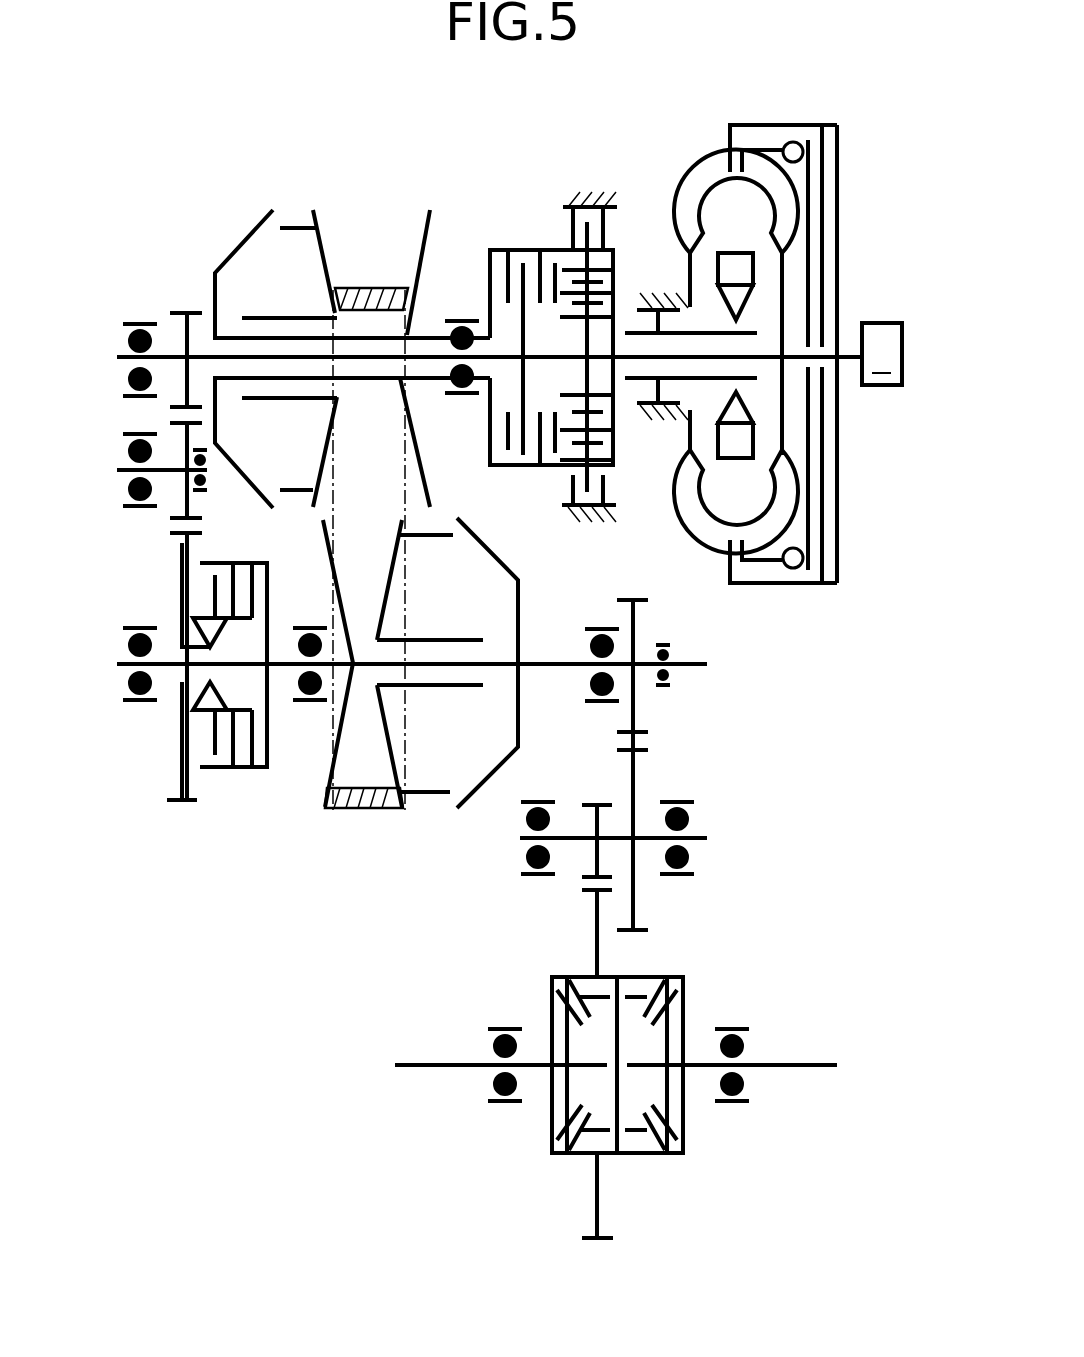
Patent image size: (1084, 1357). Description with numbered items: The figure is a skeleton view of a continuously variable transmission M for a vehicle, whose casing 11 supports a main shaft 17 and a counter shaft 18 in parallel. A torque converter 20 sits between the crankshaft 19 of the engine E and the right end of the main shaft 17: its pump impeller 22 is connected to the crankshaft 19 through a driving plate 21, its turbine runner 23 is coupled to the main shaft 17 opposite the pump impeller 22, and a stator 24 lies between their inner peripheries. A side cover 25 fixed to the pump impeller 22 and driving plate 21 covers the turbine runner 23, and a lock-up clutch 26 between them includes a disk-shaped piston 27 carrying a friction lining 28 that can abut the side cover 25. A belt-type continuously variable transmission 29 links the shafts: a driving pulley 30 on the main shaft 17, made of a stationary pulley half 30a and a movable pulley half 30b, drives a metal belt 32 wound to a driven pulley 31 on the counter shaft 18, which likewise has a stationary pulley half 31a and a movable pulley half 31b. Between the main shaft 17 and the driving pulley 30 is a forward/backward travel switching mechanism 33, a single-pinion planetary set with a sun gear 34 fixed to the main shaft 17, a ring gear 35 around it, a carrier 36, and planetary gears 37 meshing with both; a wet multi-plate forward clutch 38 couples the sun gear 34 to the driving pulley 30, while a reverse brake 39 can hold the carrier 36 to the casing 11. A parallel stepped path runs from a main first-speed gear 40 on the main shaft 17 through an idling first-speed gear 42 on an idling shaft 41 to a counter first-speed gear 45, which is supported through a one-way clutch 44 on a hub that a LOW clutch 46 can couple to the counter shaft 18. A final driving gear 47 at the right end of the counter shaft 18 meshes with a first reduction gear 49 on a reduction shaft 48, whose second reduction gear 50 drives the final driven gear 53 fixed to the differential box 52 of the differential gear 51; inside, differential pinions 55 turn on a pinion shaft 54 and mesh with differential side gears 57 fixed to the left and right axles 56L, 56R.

The continuously variable transmission M is at (300, 198).
The engine E is at (882, 354).
The casing 11 is at (575, 200).
The main shaft 17 is at (365, 362).
The counter shaft 18 is at (355, 658).
The crankshaft 19 is at (848, 362).
The torque converter 20 is at (752, 348).
The driving plate 21 is at (840, 243).
The pump impeller 22 is at (688, 190).
The turbine runner 23 is at (742, 140).
The stator 24 is at (736, 268).
The side cover 25 is at (826, 205).
The lock-up clutch 26 is at (830, 548).
The piston 27 is at (824, 296).
The friction lining 28 is at (802, 143).
The belt-type continuously variable transmission 29 is at (318, 750).
The driving pulley 30 is at (349, 457).
The stationary pulley half 30a is at (425, 208).
The movable pulley half 30b is at (318, 208).
The driven pulley 31 is at (388, 730).
The stationary pulley half 31a is at (343, 812).
The movable pulley half 31b is at (400, 812).
The metal belt 32 is at (338, 290).
The forward/backward travel switching mechanism 33 is at (528, 212).
The sun gear 34 is at (598, 405).
The ring gear 35 is at (605, 270).
The carrier 36 is at (614, 294).
The planetary gears 37 is at (573, 308).
The forward clutch 38 is at (514, 470).
The reverse brake 39 is at (612, 492).
The main first-speed gear 40 is at (182, 312).
The idling shaft 41 is at (206, 484).
The idling first-speed gear 42 is at (178, 540).
The one-way clutch 44 is at (222, 628).
The counter first-speed gear 45 is at (200, 533).
The LOW clutch 46 is at (230, 778).
The final driving gear 47 is at (626, 600).
The reduction shaft 48 is at (572, 845).
The first reduction gear 49 is at (650, 742).
The second reduction gear 50 is at (590, 804).
The differential gear 51 is at (624, 1079).
The differential box 52 is at (640, 1155).
The final driven gear 53 is at (591, 892).
The pinion shaft 54 is at (622, 985).
The differential pinions 55 is at (580, 975).
The left axle 56L is at (418, 1068).
The right axle 56R is at (812, 1068).
The differential side gears 57 is at (558, 1125).